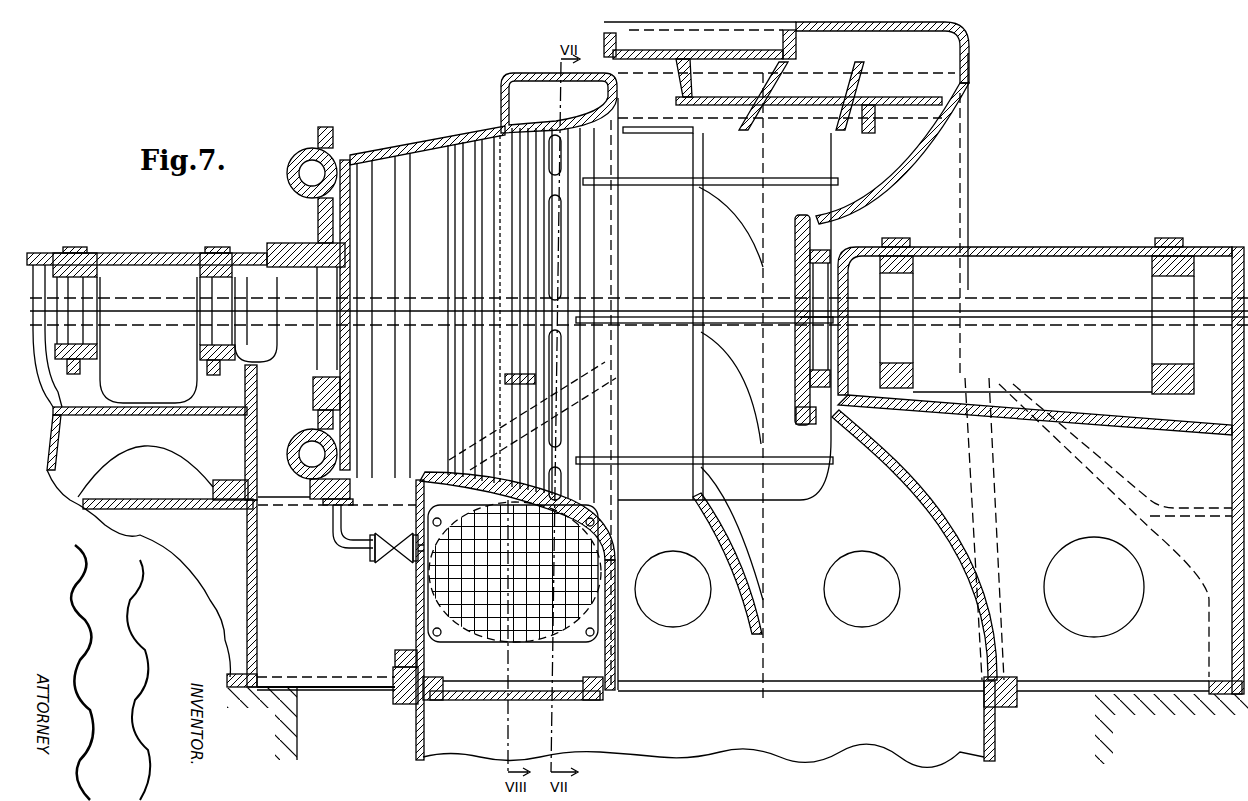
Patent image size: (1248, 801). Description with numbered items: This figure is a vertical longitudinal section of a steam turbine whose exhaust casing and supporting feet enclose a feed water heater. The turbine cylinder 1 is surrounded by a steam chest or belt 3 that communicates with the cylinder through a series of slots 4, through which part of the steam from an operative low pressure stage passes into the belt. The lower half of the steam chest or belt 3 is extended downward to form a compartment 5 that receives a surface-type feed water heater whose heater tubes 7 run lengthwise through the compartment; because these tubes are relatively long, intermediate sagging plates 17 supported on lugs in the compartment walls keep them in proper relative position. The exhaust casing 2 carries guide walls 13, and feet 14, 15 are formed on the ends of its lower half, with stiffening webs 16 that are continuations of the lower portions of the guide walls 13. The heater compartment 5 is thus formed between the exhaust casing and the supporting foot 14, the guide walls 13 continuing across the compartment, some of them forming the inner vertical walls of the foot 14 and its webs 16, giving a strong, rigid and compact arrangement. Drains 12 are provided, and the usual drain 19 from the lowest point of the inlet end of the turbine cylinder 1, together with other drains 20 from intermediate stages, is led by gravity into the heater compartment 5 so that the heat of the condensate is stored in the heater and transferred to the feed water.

The turbine cylinder 1 is at (430, 157).
The exhaust casing 2 is at (686, 35).
The steam chest or belt 3 is at (519, 100).
The slots 4 is at (566, 148).
The compartment 5 is at (415, 640).
The heater tubes 7 is at (423, 587).
The drains 12 is at (326, 666).
The guide walls 13 is at (661, 185).
The supporting foot 14 is at (258, 635).
The supporting foot 15 is at (1229, 641).
The stiffening webs 16 is at (332, 654).
The sagging plates 17 is at (427, 540).
The drain 19 is at (333, 528).
The drains 20 is at (443, 490).